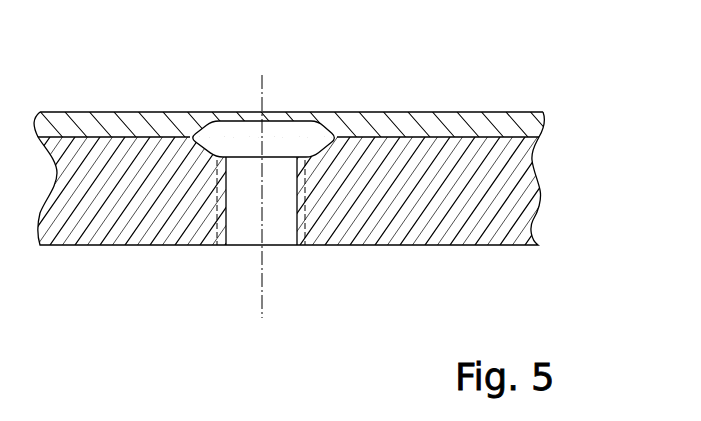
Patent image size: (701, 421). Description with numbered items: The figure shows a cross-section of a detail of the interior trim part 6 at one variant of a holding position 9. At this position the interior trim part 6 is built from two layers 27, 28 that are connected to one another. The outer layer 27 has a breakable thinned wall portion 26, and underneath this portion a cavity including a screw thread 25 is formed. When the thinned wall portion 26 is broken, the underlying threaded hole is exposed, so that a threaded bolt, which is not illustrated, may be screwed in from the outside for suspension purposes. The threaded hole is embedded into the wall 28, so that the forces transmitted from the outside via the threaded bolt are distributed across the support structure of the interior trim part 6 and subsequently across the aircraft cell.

The interior trim part 6 is at (435, 205).
The holding position 9 is at (272, 218).
The screw thread 25 is at (216, 237).
The breakable thinned wall portion 26 is at (250, 118).
The layer 27 is at (398, 112).
The wall 28 is at (517, 128).